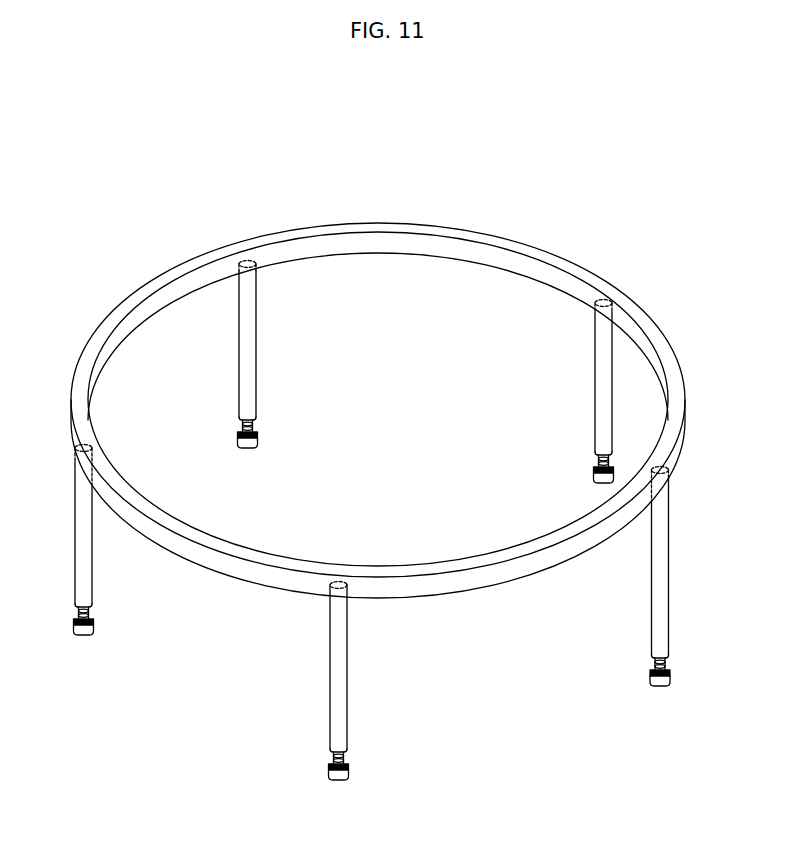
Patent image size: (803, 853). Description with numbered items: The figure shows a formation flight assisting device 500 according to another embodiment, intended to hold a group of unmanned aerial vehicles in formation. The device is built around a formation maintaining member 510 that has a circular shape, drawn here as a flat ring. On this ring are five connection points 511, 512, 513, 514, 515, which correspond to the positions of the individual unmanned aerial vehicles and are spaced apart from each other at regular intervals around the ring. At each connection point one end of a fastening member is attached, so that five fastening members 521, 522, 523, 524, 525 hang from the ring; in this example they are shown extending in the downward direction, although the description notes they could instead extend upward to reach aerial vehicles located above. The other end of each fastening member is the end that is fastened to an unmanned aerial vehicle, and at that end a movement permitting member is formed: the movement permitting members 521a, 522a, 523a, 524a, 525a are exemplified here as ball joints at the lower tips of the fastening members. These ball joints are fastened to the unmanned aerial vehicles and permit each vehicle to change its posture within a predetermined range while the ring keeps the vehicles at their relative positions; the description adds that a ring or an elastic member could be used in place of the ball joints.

The formation flight assisting device 500 is at (650, 210).
The formation maintaining member 510 is at (464, 228).
The connection point 511 is at (82, 447).
The connection point 512 is at (246, 262).
The connection point 513 is at (604, 300).
The connection point 514 is at (664, 470).
The connection point 515 is at (338, 584).
The fastening member 521 is at (85, 543).
The movement permitting member 521a is at (90, 632).
The fastening member 522 is at (252, 304).
The movement permitting member 522a is at (255, 446).
The fastening member 523 is at (598, 345).
The movement permitting member 523a is at (598, 472).
The fastening member 524 is at (658, 548).
The movement permitting member 524a is at (662, 688).
The fastening member 525 is at (342, 638).
The movement permitting member 525a is at (345, 782).